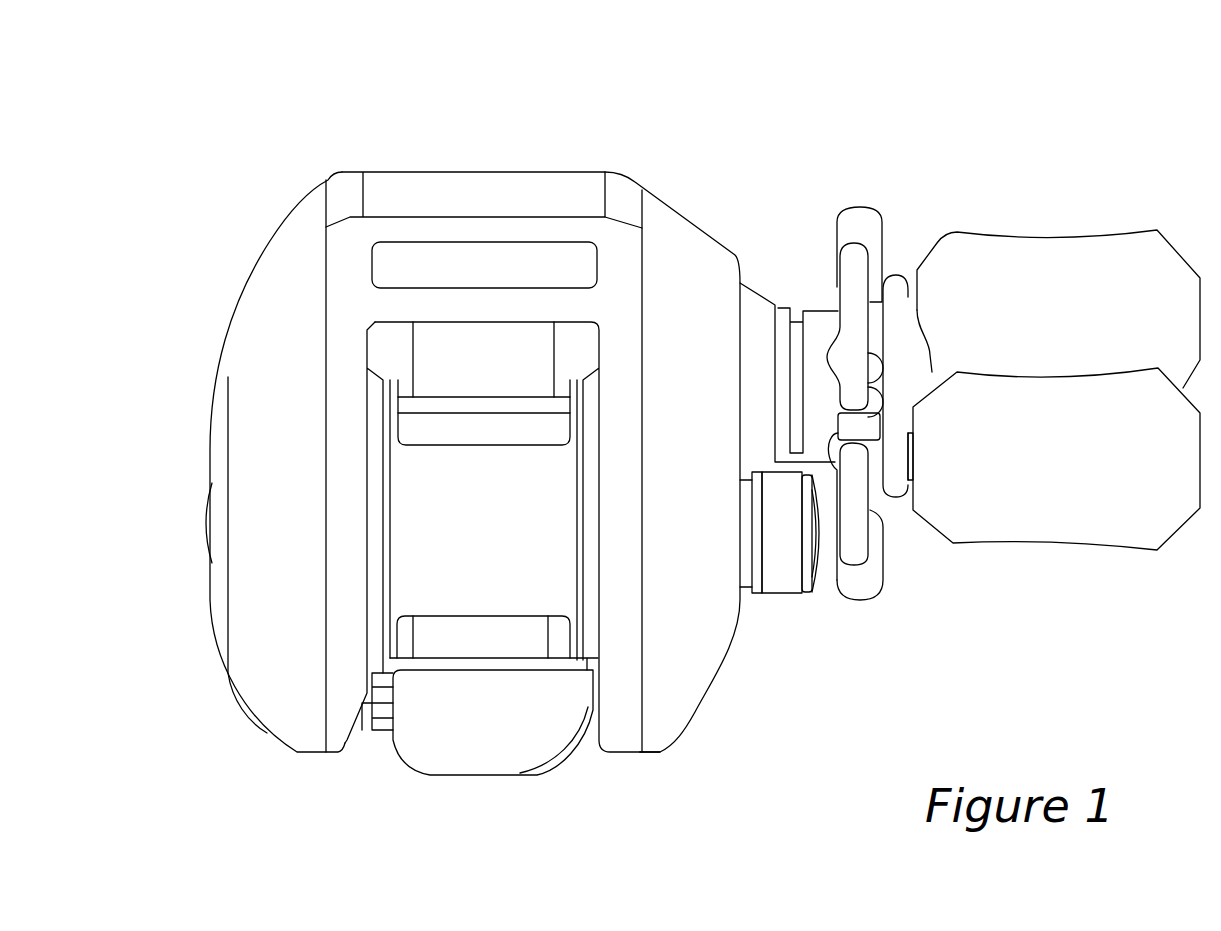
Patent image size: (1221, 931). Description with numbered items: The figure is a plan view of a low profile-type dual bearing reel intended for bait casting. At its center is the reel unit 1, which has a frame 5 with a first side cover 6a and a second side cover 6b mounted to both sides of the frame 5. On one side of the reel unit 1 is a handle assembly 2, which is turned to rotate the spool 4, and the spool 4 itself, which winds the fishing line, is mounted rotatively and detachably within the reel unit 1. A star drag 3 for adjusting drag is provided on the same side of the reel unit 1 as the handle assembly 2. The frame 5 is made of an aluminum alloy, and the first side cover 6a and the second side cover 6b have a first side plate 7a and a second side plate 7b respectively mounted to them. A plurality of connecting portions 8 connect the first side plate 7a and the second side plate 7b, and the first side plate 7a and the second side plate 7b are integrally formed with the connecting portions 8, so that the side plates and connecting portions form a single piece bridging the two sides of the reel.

The reel unit 1 is at (705, 203).
The handle assembly 2 is at (1103, 247).
The star drag 3 is at (868, 217).
The spool 4 is at (462, 608).
The frame 5 is at (350, 168).
The first side cover 6a is at (267, 718).
The second side cover 6b is at (675, 732).
The first side plate 7a is at (342, 743).
The second side plate 7b is at (620, 745).
The connecting portions 8 is at (568, 217).